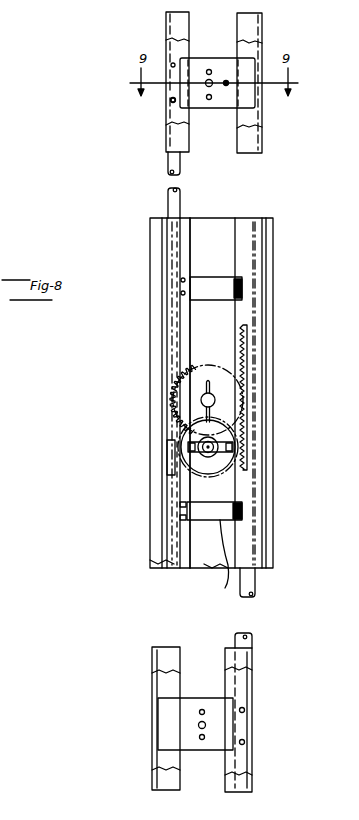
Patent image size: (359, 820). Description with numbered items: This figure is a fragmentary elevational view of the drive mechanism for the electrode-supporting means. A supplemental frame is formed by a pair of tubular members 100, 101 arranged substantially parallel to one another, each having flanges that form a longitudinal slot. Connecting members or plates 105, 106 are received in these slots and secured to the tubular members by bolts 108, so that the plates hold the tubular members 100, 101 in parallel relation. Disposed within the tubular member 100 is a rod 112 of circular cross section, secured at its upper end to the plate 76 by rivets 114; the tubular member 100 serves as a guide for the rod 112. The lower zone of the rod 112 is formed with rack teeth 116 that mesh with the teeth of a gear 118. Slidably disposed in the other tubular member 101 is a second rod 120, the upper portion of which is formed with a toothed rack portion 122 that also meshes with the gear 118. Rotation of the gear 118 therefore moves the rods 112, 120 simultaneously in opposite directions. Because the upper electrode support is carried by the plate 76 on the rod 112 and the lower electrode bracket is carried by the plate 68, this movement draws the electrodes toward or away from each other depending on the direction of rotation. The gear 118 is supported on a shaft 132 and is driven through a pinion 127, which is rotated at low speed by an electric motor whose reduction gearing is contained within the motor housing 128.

The tubular member 100 is at (166, 25).
The tubular member 101 is at (262, 30).
The plate 76 is at (205, 62).
The rivets 114 is at (171, 101).
The rod 112 is at (168, 190).
The connecting member or plate 105 is at (222, 282).
The bolts 108 is at (242, 292).
The toothed rack portion 122 is at (248, 355).
The shaft 132 is at (215, 400).
The gear 118 is at (180, 380).
The pinion 127 is at (253, 433).
The motor housing 128 is at (230, 470).
The rack teeth 116 is at (172, 478).
The connecting member or plate 106 is at (208, 560).
The second rod 120 is at (253, 633).
The plate 68 is at (165, 718).